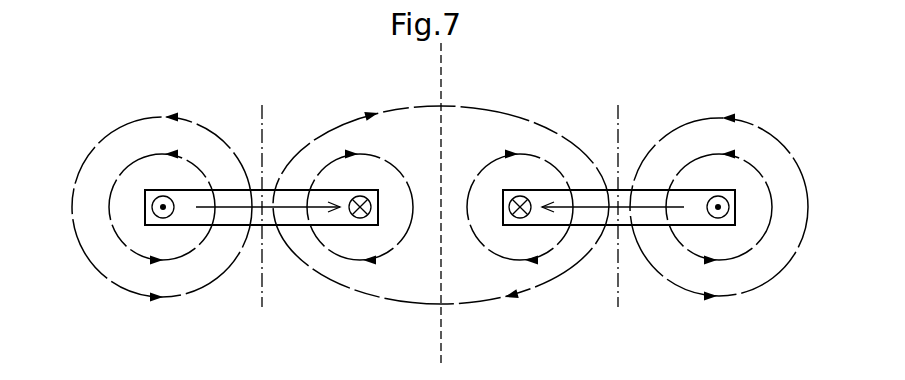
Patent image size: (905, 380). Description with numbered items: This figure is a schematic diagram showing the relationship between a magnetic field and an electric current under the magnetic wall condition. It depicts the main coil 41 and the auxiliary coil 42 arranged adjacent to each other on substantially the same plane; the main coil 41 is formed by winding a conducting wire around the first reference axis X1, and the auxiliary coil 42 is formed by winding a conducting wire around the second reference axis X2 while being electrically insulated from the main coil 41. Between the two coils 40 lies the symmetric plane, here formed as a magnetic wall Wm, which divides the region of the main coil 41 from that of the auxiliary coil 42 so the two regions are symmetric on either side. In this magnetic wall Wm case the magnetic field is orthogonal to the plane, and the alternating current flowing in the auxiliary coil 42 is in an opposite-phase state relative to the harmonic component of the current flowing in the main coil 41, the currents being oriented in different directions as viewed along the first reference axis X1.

The conductors (bus bars) 40 is at (440, 261).
The main coil 41 is at (253, 225).
The auxiliary coil 42 is at (626, 225).
The first reference axis X1 is at (263, 193).
The second reference axis X2 is at (620, 193).
The magnetic wall Wm is at (442, 70).